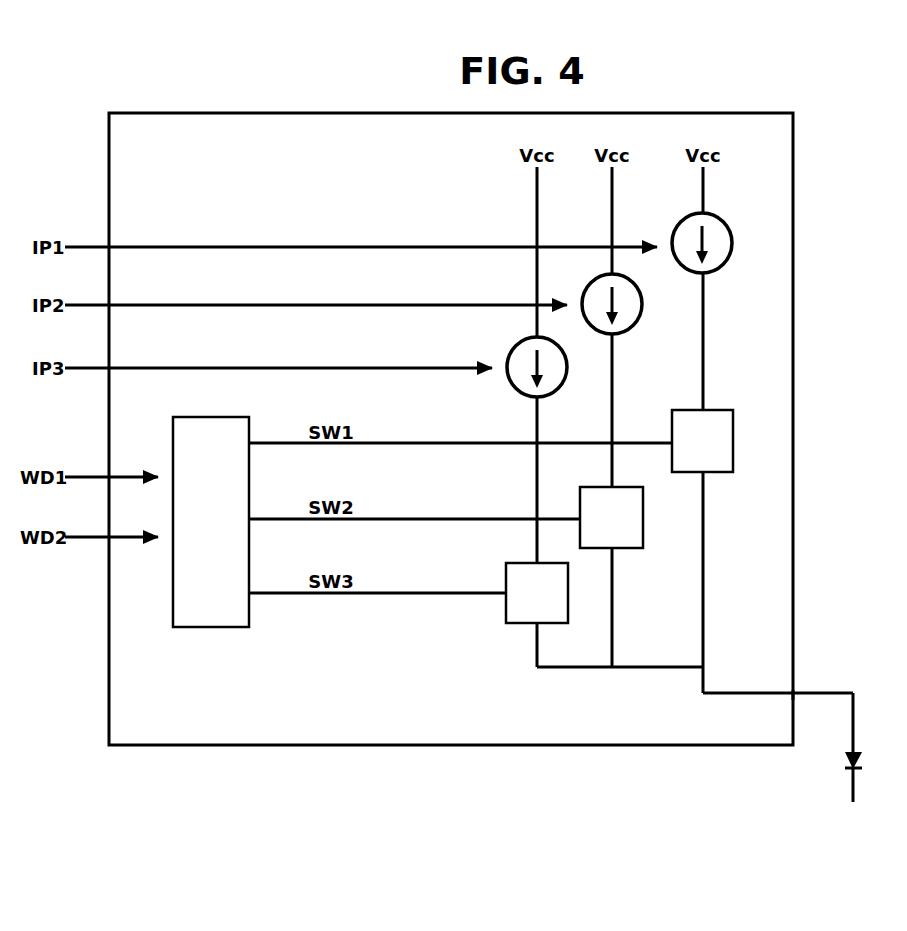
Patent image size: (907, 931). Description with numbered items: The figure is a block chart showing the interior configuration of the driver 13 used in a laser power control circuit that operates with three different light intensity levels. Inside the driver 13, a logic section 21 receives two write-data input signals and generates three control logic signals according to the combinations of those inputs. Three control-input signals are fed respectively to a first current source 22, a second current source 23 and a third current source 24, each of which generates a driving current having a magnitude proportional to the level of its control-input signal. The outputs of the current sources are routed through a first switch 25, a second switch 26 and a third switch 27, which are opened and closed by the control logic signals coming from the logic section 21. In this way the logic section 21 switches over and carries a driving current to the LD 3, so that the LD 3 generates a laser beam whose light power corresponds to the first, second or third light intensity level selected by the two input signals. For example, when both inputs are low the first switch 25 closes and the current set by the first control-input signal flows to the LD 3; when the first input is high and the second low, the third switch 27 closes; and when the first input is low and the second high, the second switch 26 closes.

The driver 13 is at (168, 113).
The logic section 21 is at (197, 417).
The first current source 22 is at (680, 226).
The second current source 23 is at (590, 288).
The third current source 24 is at (516, 350).
The first switch 25 is at (686, 410).
The second switch 26 is at (592, 487).
The third switch 27 is at (516, 563).
The LD 3 is at (857, 760).